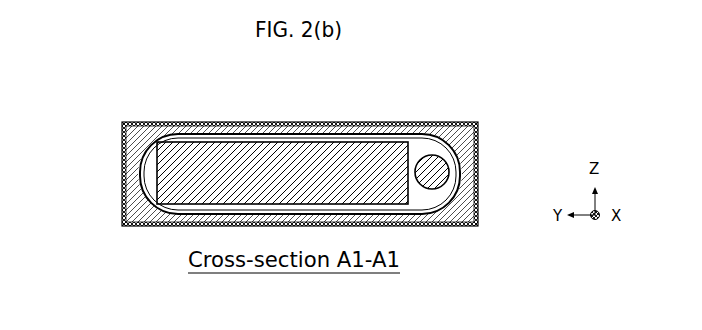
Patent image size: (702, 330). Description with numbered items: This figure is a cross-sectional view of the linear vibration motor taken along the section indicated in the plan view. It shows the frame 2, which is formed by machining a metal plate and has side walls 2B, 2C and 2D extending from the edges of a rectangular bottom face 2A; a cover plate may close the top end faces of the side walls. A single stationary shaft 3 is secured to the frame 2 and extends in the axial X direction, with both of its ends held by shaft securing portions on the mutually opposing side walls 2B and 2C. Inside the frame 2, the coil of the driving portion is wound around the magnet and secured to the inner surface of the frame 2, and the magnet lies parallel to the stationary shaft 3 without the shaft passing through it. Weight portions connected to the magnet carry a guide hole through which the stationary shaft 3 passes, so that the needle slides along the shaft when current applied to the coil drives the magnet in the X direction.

The frame 2 is at (453, 227).
The rectangular bottom face 2A is at (478, 214).
The side wall 2B is at (123, 143).
The side wall 2C is at (478, 149).
The side wall 2D is at (401, 122).
The stationary shaft 3 is at (440, 172).